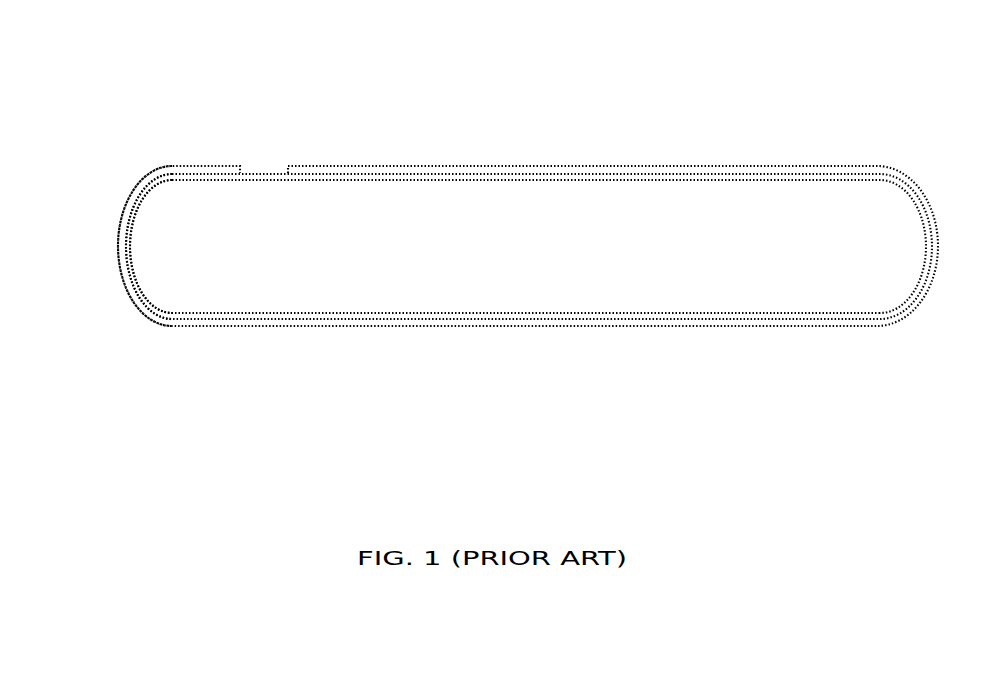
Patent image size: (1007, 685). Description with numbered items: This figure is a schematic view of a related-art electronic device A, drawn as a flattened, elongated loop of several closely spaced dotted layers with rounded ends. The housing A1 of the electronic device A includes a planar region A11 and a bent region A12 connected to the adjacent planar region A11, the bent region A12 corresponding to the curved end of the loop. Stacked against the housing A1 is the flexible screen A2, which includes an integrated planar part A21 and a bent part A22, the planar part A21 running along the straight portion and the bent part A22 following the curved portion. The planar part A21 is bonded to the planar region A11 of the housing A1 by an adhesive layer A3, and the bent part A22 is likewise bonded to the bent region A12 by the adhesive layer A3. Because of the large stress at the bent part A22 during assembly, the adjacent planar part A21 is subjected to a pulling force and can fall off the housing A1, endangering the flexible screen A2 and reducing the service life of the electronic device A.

The electronic device A is at (156, 69).
The housing A1 is at (287, 375).
The planar region A11 is at (210, 178).
The bent region A12 is at (135, 270).
The flexible screen A2 is at (313, 45).
The planar part A21 is at (195, 168).
The bent part A22 is at (118, 248).
The adhesive layer A3 is at (120, 252).